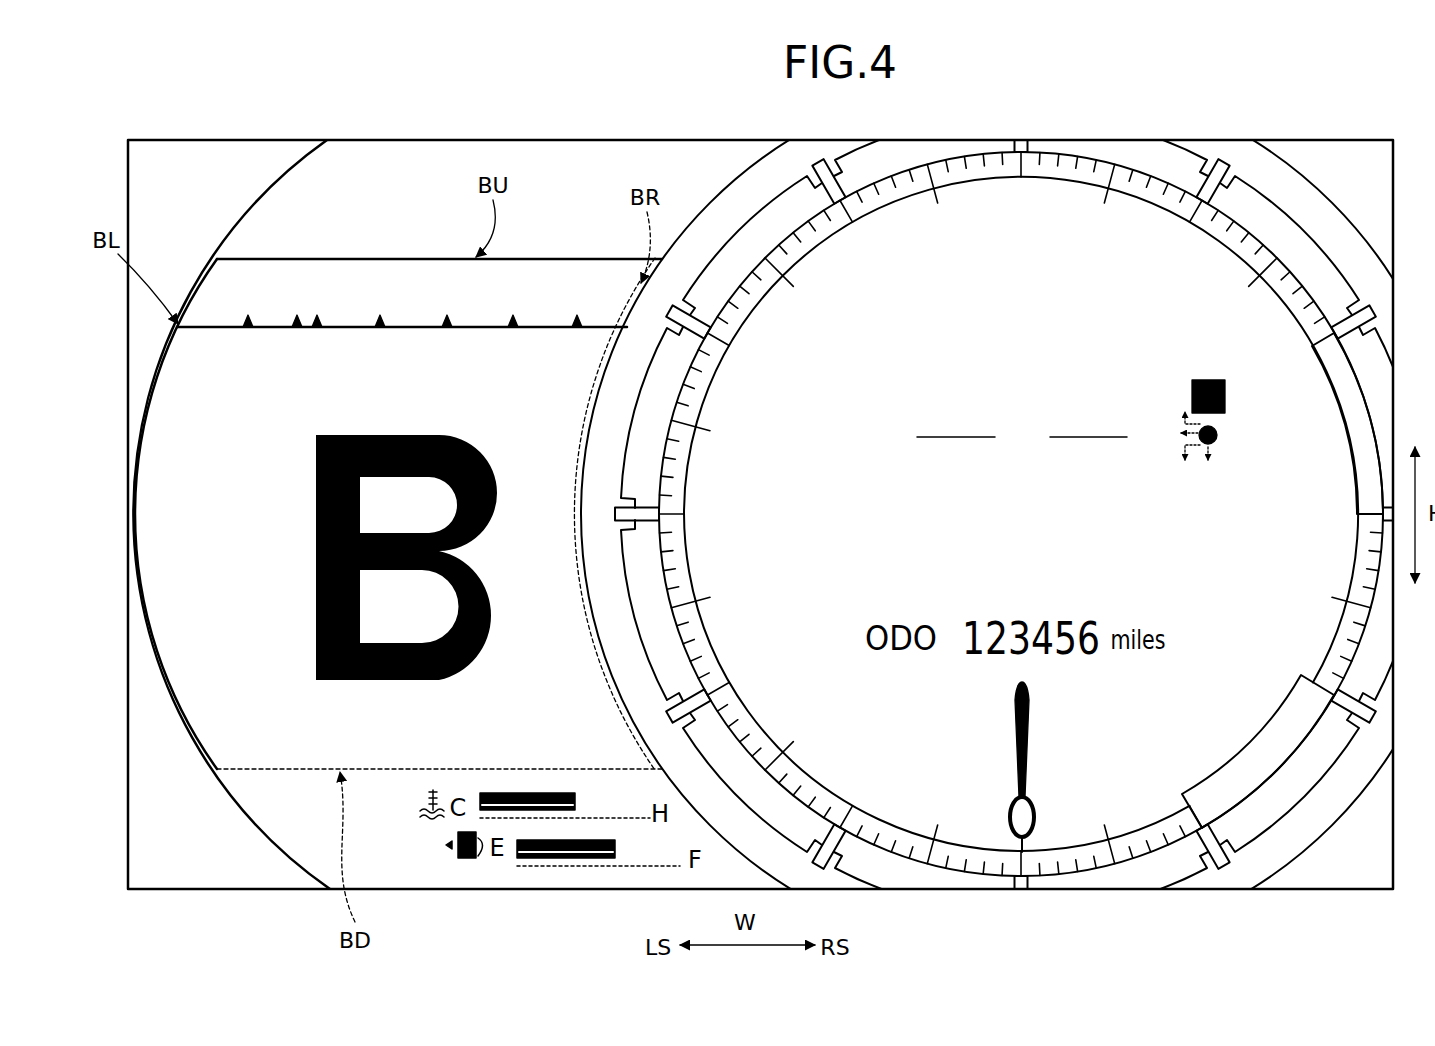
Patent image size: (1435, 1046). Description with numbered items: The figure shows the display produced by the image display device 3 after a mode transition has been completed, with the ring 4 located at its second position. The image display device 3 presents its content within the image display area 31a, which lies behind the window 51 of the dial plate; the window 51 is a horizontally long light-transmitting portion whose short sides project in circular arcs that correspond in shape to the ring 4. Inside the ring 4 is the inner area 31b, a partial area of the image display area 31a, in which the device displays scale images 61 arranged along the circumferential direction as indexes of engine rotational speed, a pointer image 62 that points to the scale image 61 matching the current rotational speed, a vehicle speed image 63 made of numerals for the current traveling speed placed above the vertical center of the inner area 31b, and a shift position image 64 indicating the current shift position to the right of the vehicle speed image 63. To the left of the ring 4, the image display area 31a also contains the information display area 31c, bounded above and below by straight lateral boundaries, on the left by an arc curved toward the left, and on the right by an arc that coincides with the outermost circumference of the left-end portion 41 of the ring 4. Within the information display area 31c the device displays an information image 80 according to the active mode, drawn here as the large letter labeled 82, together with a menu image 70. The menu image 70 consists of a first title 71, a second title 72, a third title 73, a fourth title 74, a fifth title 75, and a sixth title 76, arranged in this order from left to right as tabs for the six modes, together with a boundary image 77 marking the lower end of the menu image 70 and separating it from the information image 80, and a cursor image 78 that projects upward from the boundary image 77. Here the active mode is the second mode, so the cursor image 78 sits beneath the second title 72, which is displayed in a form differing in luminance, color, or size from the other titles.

The image display device 3 is at (312, 106).
The ring 4 is at (736, 174).
The image display area 31a is at (236, 238).
The inner area 31b is at (922, 250).
The information display area 31c is at (449, 260).
The left-end portion 41 is at (578, 482).
The window 51 is at (362, 152).
The scale images 61 is at (764, 286).
The pointer image 62 is at (1033, 728).
The vehicle speed image 63 is at (980, 336).
The shift position image 64 is at (1142, 372).
The menu image 70 is at (402, 344).
The first title 71 is at (248, 328).
The second title 72 is at (297, 328).
The third title 73 is at (380, 328).
The fourth title 74 is at (447, 328).
The fifth title 75 is at (513, 328).
The sixth title 76 is at (567, 336).
The boundary image 77 is at (409, 331).
The cursor image 78 is at (320, 334).
The information image 80 is at (300, 483).
The selected content 82 is at (363, 555).